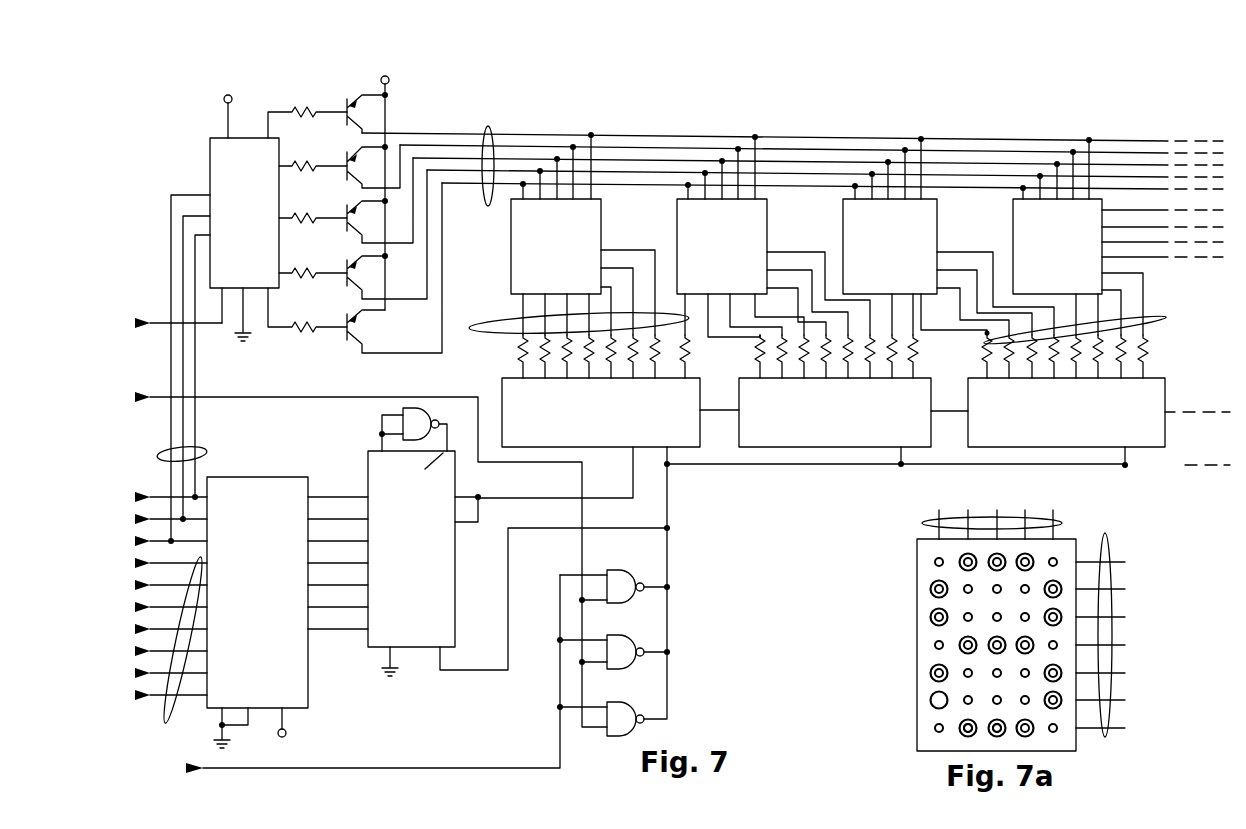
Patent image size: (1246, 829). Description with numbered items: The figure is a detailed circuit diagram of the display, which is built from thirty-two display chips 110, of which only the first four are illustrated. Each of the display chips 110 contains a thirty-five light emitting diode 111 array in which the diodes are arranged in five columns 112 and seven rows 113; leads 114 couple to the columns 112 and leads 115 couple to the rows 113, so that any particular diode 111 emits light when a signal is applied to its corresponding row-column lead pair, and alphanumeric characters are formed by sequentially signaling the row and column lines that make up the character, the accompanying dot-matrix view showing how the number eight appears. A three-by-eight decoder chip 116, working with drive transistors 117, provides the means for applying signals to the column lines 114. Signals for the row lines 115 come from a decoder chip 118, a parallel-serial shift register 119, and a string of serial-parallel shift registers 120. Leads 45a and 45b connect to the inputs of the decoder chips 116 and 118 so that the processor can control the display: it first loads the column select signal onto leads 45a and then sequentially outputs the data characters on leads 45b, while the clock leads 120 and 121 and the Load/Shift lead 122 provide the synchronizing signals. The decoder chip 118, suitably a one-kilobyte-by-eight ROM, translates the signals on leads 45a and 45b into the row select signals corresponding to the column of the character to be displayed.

In FIG. 7, the display chips 110 is at (511, 230).
In FIG. 7A, the light emitting diode 111 is at (934, 645).
In FIG. 7A, the columns 112 is at (931, 614).
In FIG. 7A, the rows 113 is at (993, 727).
In FIG. 7, the column leads 114 is at (482, 206).
In FIG. 7A, the column leads 114 is at (922, 523).
In FIG. 7, the row leads 115 is at (1189, 324).
In FIG. 7A, the row leads 115 is at (1108, 626).
In FIG. 7, the 3×8 decoder chip 116 is at (210, 154).
In FIG. 7, the drive transistors 117 is at (346, 158).
In FIG. 7, the decoder chip 118 is at (308, 668).
In FIG. 7, the parallel-serial shift register 119 is at (368, 470).
In FIG. 7, the serial-parallel shift registers 120 is at (502, 384).
In FIG. 7, the clock lead 121 is at (204, 330).
In FIG. 7, the Load/Shift lead 122 is at (248, 397).
In FIG. 7, the leads 45a is at (200, 451).
In FIG. 7, the leads 45b is at (177, 651).